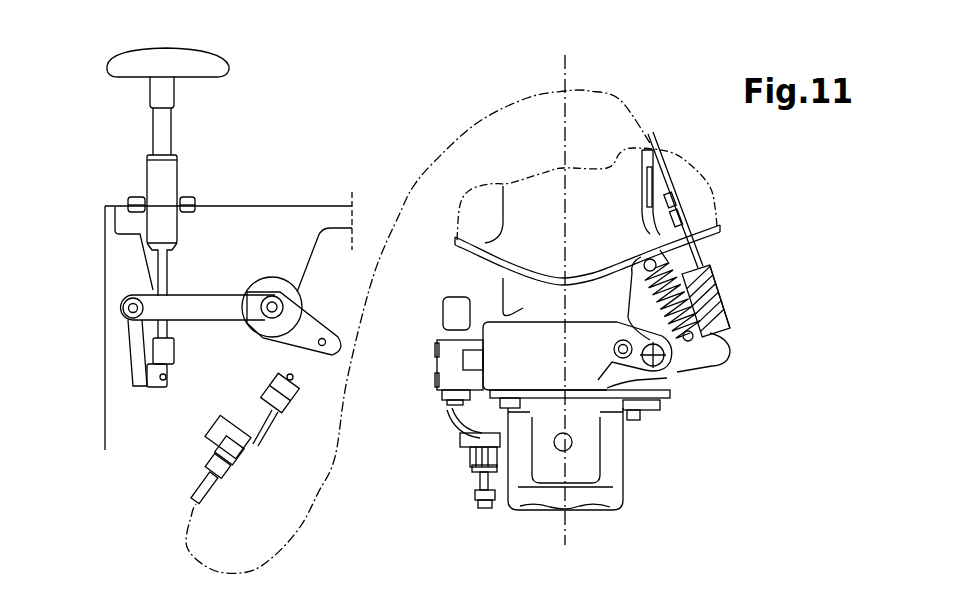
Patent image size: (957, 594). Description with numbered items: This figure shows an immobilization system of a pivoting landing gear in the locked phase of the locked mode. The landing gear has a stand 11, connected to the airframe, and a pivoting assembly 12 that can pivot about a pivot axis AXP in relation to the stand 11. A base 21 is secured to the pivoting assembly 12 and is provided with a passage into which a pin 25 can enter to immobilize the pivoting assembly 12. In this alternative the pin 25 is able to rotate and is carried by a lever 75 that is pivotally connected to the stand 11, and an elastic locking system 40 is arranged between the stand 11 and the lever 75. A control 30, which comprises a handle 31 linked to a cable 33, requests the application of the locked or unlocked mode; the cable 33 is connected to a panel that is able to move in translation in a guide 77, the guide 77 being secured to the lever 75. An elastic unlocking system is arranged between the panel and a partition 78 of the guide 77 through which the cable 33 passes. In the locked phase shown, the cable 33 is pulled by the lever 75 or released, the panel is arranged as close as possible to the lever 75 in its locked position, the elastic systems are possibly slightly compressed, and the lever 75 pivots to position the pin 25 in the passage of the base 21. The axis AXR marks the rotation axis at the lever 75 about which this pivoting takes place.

The control 30 is at (116, 138).
The handle 31 is at (200, 65).
The pivot axis AXP is at (563, 75).
The cable 33 is at (648, 138).
The stand 11 is at (503, 263).
The elastic locking system 40 is at (633, 297).
The partition 78 is at (703, 262).
The guide 77 is at (717, 272).
The lever 75 is at (731, 333).
The rotation axis AXR is at (658, 357).
The pin 25 is at (652, 410).
The base 21 is at (637, 422).
The pivoting assembly 12 is at (634, 474).